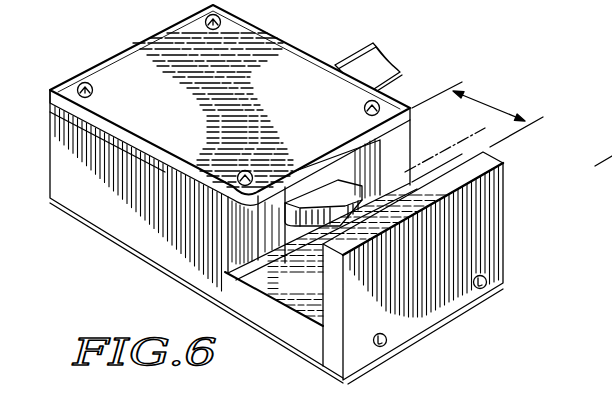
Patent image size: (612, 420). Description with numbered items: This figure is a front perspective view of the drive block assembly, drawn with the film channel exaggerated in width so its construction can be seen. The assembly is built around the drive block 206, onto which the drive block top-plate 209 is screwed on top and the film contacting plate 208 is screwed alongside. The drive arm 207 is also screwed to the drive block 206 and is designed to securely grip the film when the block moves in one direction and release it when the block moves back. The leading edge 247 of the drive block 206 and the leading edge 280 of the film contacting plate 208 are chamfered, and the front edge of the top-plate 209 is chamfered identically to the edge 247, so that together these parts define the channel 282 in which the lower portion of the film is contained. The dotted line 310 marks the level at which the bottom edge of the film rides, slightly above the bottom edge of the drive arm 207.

The drive block 206 is at (80, 200).
The drive arm 207 is at (302, 204).
The film contacting plate 208 is at (484, 220).
The drive block top-plate 209 is at (314, 73).
The leading edge of drive block 247 is at (236, 199).
The leading edge of film contacting plate 280 is at (336, 238).
The channel 282 is at (514, 69).
The dotted line 310 is at (420, 157).